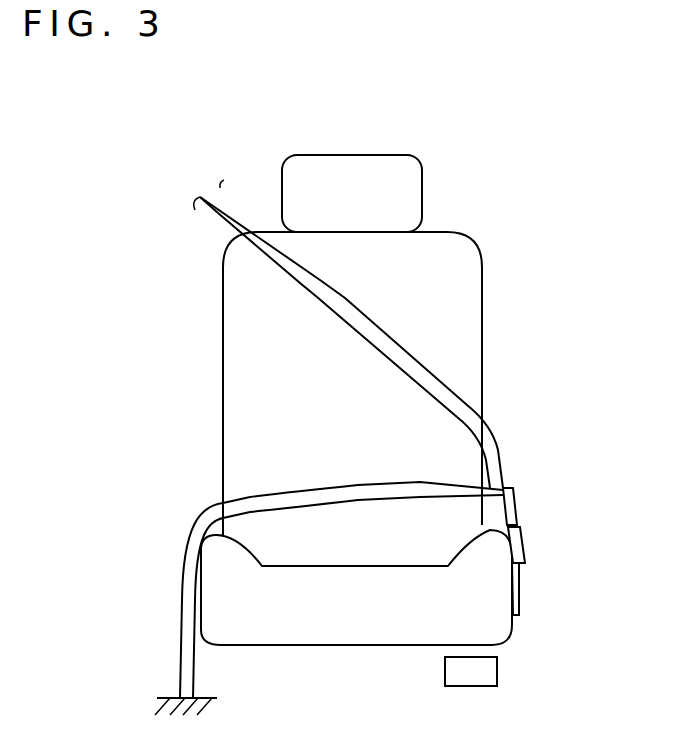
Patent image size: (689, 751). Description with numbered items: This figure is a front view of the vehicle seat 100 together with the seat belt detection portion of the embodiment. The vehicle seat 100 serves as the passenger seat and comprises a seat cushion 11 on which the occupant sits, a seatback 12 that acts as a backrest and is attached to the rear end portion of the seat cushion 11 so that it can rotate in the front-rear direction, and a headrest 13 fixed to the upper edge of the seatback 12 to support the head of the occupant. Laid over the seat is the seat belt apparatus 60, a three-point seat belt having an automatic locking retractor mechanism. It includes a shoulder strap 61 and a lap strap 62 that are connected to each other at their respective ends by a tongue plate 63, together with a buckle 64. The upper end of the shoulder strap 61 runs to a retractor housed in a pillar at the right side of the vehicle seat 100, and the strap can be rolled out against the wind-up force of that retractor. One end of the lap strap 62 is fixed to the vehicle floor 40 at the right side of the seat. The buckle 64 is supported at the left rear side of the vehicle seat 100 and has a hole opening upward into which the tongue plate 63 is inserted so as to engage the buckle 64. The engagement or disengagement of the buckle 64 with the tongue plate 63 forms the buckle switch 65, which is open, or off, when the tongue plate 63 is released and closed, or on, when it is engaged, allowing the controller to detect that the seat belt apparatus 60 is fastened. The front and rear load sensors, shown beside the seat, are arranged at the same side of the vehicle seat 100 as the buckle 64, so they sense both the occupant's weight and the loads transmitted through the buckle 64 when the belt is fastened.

The vehicle seat 100 is at (488, 238).
The seat cushion 11 is at (320, 630).
The seatback 12 is at (463, 313).
The headrest 13 is at (345, 168).
The vehicle floor 40 is at (164, 697).
The seat belt apparatus 60 is at (176, 146).
The shoulder strap 61 is at (218, 213).
The lap strap 62 is at (205, 518).
The tongue plate 63 is at (510, 500).
The buckle 64 is at (520, 533).
The buckle switch 65 is at (530, 516).